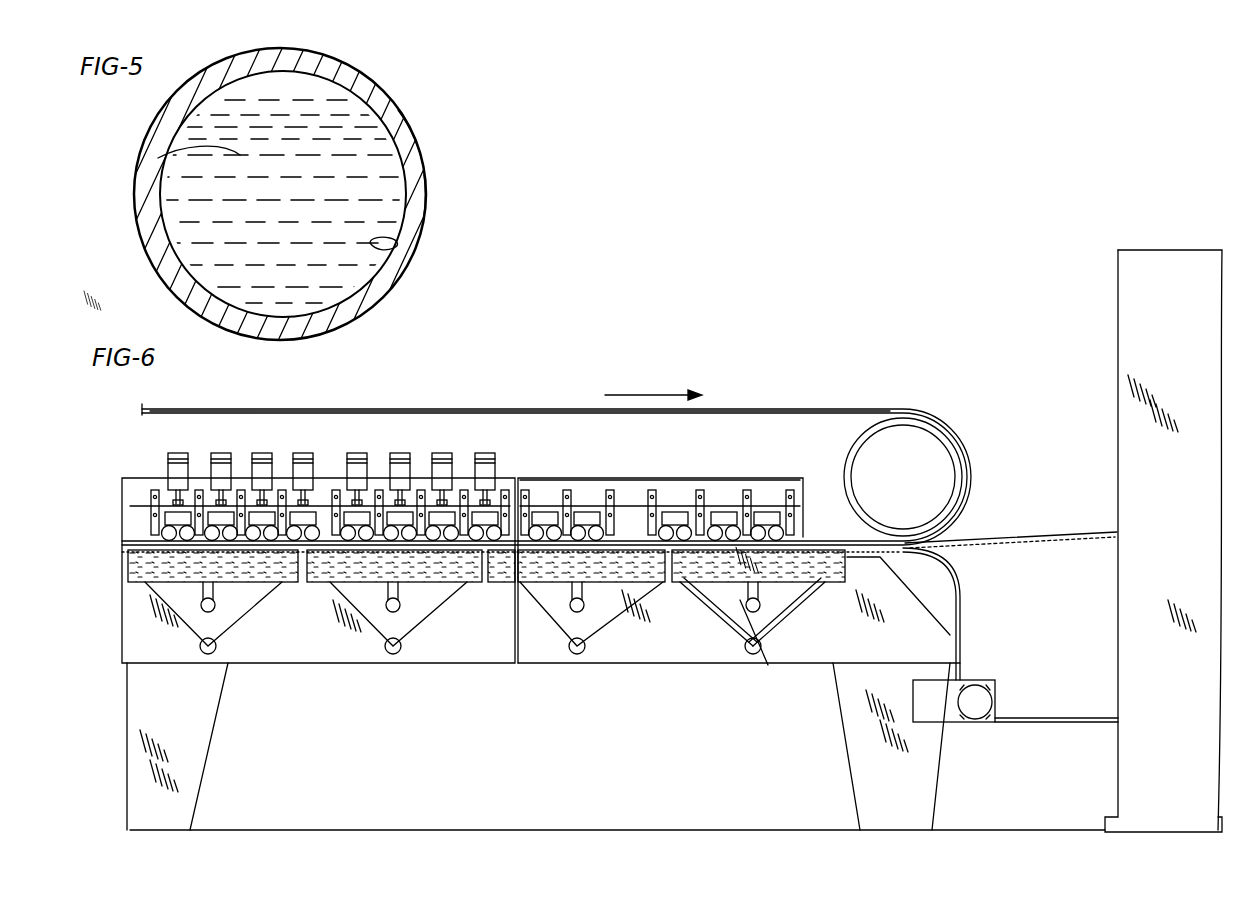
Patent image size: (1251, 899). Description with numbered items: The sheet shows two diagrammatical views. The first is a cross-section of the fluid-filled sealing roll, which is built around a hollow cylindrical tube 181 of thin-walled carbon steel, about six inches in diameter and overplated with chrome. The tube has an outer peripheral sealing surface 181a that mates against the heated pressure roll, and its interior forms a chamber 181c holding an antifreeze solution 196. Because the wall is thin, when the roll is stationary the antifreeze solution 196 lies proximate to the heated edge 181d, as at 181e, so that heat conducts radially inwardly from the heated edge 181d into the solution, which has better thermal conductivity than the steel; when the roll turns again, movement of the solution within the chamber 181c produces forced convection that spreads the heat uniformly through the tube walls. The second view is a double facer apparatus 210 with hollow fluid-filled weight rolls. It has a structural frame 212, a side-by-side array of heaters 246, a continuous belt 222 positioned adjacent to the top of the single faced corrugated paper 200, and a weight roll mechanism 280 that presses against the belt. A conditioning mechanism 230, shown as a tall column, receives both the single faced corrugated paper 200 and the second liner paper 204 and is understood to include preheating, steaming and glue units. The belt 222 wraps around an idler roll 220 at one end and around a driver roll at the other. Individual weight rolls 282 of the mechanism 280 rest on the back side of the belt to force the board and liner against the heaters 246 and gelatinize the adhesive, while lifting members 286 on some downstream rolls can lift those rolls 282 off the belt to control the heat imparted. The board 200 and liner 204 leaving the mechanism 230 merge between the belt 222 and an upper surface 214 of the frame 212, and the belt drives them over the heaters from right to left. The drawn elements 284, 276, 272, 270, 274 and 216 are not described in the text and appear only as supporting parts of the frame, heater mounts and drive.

In FIG. 5, the hollow cylindrical tube 181 is at (397, 108).
In FIG. 5, the outer peripheral sealing surface 181a is at (425, 165).
In FIG. 5, the chamber 181c is at (236, 227).
In FIG. 5, the heated edge 181d is at (432, 203).
In FIG. 5, the location proximate the heated edge 181e is at (394, 245).
In FIG. 5, the antifreeze solution 196 is at (162, 156).
In FIG. 6, the conditioning mechanism 230 is at (1160, 263).
In FIG. 6, the weight roll mechanism 280 is at (540, 480).
In FIG. 6, the double facer apparatus 210 is at (552, 408).
In FIG. 6, the continuous belt 222 is at (838, 543).
In FIG. 6, the idler roll 220 is at (915, 472).
In FIG. 6, the lifting members 286 is at (445, 465).
In FIG. 6, the weight rolls 282 is at (598, 535).
In FIG. 6, the bracket plates 284 is at (673, 508).
In FIG. 6, the single faced corrugated paper 200 is at (1230, 532).
In FIG. 6, the upper surface of the frame 214 is at (948, 565).
In FIG. 6, the support arm 276 is at (740, 628).
In FIG. 6, the support arm 272 is at (736, 636).
In FIG. 6, the support linkage 270 is at (752, 654).
In FIG. 6, the pivot 274 is at (760, 660).
In FIG. 6, the heaters 246 is at (656, 584).
In FIG. 6, the motor 216 is at (978, 712).
In FIG. 6, the structural frame 212 is at (875, 802).
In FIG. 6, the second liner paper 204 is at (1228, 724).